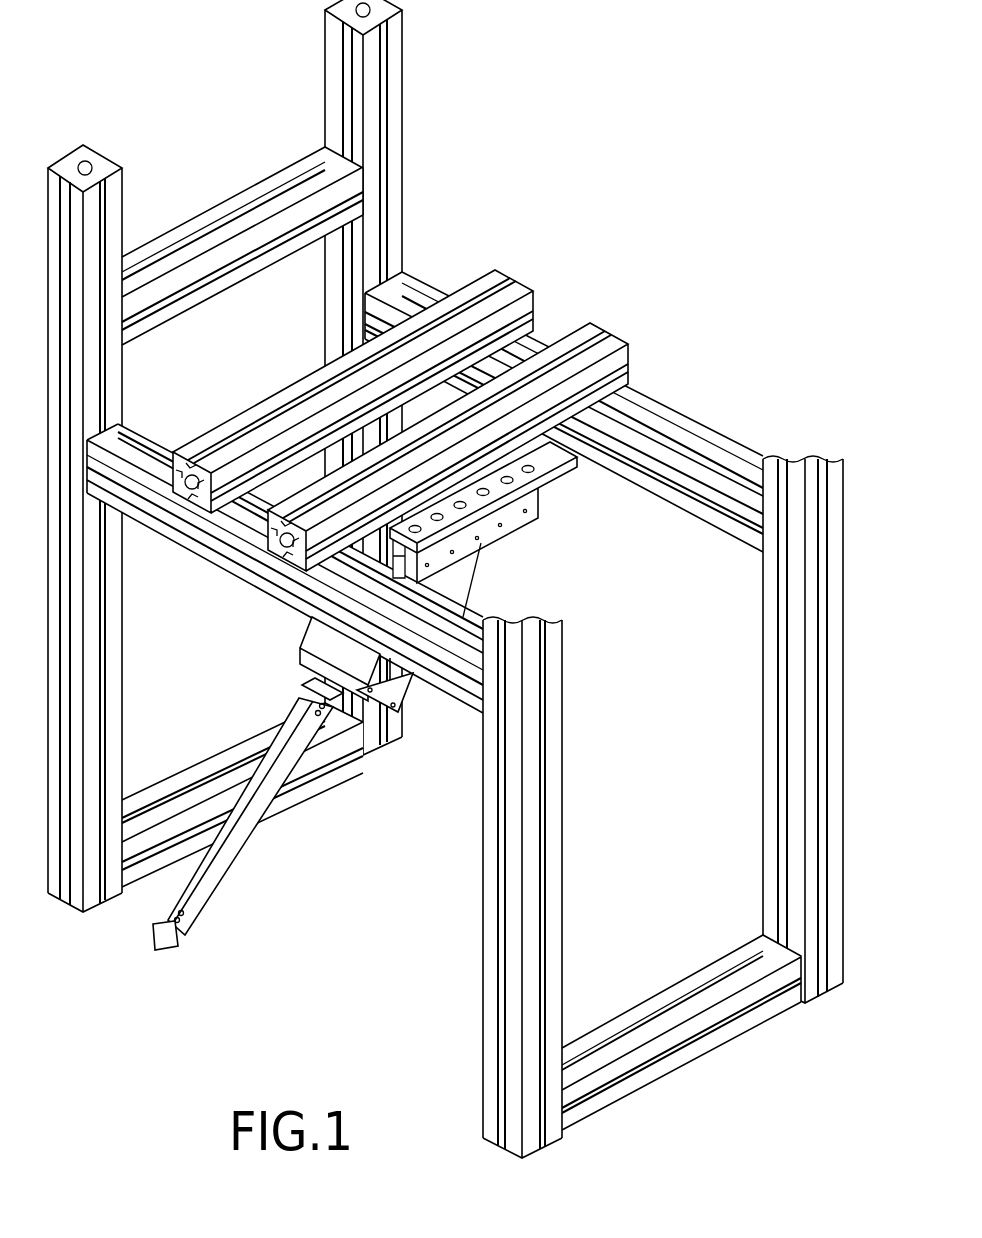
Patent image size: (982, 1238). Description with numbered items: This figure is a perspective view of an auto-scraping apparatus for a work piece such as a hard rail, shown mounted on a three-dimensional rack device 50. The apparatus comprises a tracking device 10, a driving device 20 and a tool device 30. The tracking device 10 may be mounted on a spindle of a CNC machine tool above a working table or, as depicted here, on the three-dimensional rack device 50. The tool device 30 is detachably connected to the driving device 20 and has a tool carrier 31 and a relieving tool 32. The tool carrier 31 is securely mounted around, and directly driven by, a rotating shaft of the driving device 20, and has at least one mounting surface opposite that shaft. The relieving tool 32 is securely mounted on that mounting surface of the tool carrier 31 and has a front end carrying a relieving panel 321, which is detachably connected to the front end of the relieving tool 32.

The tracking device 10 is at (477, 579).
The driving device 20 is at (333, 645).
The tool device 30 is at (248, 837).
The tool carrier 31 is at (333, 692).
The relieving tool 32 is at (247, 812).
The relieving panel 321 is at (165, 940).
The three-dimensional rack device 50 is at (280, 398).